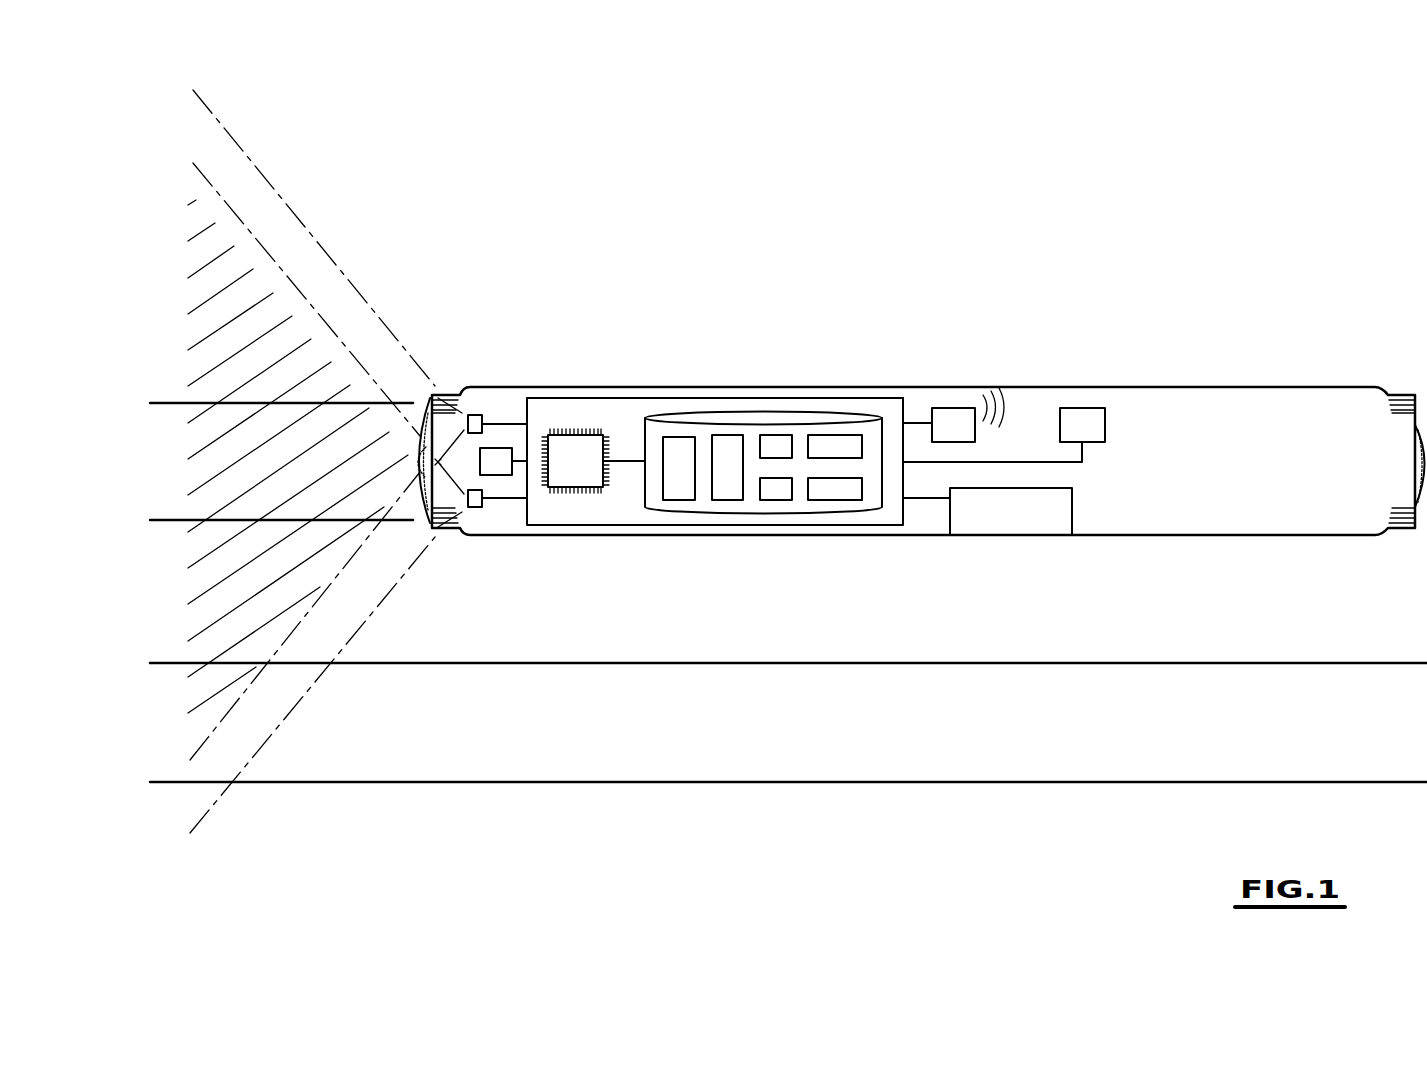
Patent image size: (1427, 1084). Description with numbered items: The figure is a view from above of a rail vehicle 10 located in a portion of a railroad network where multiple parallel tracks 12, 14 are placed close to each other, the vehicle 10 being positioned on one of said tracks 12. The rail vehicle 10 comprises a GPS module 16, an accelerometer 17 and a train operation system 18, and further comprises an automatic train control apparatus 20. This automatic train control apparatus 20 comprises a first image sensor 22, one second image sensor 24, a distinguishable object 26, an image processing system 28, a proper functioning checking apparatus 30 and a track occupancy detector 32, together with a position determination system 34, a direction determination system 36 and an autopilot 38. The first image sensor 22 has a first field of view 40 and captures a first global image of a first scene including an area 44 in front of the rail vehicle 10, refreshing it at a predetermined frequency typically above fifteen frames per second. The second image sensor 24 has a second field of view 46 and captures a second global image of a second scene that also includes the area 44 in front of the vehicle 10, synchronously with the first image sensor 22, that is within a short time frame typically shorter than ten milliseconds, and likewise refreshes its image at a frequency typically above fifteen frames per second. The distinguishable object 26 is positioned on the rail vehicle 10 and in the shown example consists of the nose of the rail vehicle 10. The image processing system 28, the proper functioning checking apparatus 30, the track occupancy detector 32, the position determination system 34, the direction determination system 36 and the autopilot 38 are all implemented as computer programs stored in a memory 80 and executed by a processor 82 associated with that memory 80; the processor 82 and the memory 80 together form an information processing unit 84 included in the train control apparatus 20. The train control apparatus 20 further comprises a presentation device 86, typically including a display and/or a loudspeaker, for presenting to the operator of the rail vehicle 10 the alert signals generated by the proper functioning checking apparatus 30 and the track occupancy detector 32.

The rail vehicle 10 is at (1265, 365).
The track 12 is at (165, 484).
The track 14 is at (155, 725).
The GPS module 16 is at (960, 420).
The accelerometer 17 is at (1077, 418).
The train operation system 18 is at (998, 513).
The automatic train control apparatus 20 is at (558, 383).
The first image sensor 22 is at (477, 415).
The second image sensor 24 is at (476, 507).
The distinguishable object 26 is at (413, 460).
The image processing system 28 is at (683, 447).
The proper functioning checking apparatus 30 is at (728, 487).
The track occupancy detector 32 is at (775, 443).
The position determination system 34 is at (835, 447).
The direction determination system 36 is at (840, 490).
The autopilot 38 is at (775, 488).
The first field of view 40 is at (263, 177).
The area in front of the rail vehicle 44 is at (215, 285).
The second field of view 46 is at (317, 313).
The memory 80 is at (733, 418).
The processor 82 is at (578, 467).
The information processing unit 84 is at (623, 523).
The presentation device 86 is at (494, 455).